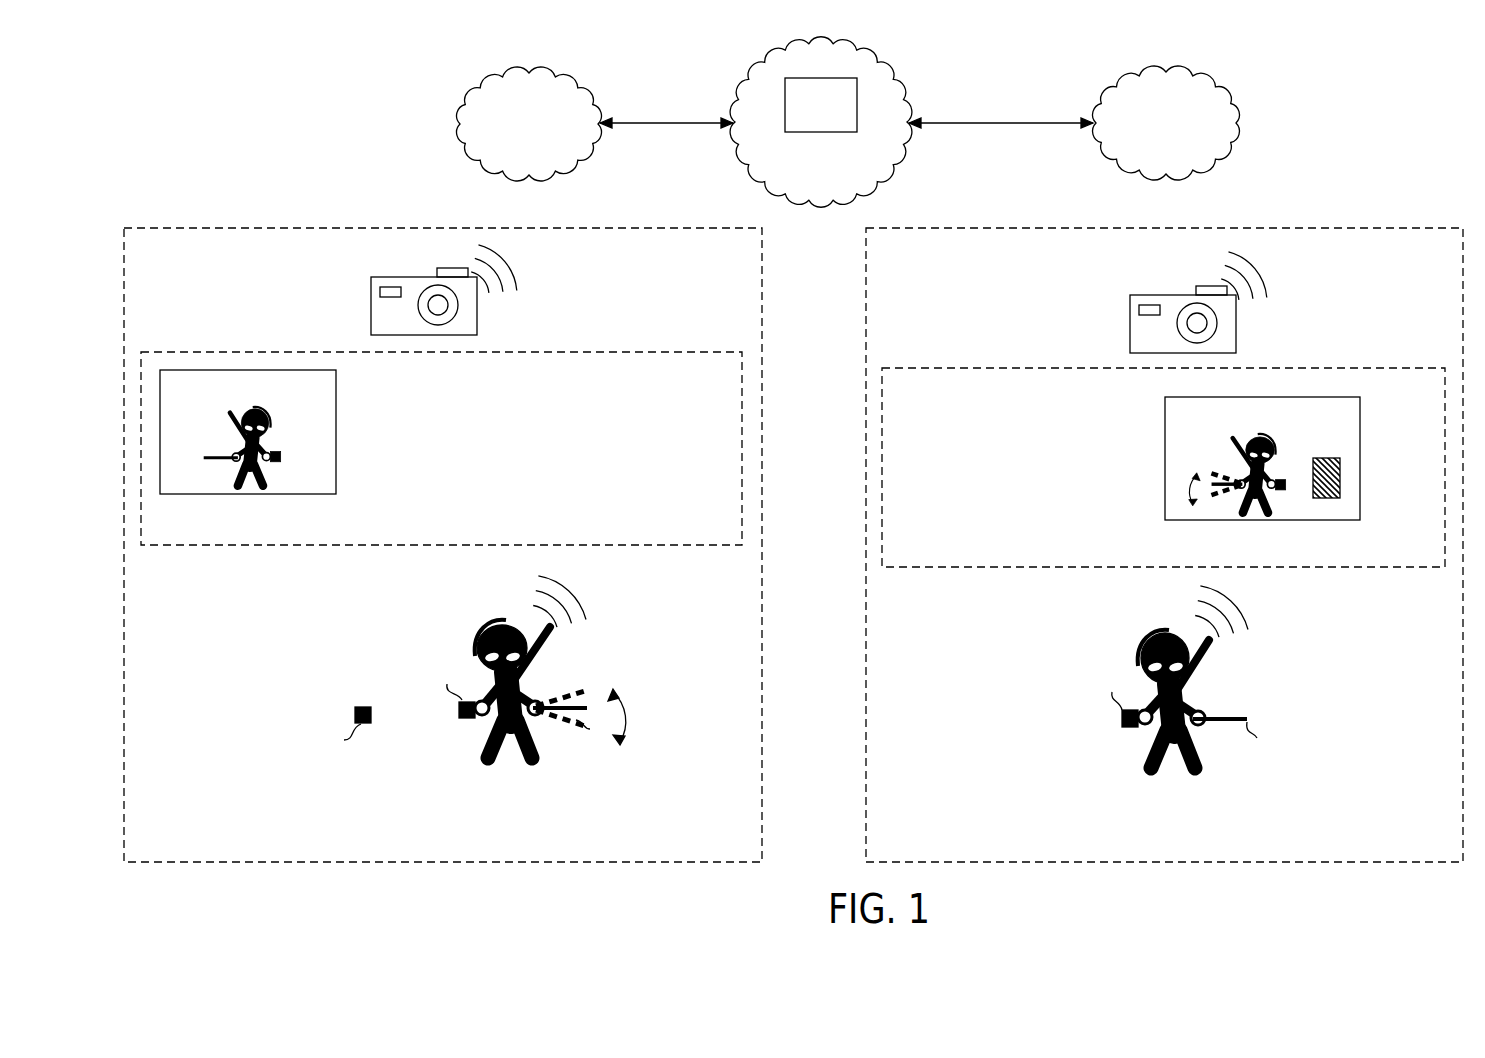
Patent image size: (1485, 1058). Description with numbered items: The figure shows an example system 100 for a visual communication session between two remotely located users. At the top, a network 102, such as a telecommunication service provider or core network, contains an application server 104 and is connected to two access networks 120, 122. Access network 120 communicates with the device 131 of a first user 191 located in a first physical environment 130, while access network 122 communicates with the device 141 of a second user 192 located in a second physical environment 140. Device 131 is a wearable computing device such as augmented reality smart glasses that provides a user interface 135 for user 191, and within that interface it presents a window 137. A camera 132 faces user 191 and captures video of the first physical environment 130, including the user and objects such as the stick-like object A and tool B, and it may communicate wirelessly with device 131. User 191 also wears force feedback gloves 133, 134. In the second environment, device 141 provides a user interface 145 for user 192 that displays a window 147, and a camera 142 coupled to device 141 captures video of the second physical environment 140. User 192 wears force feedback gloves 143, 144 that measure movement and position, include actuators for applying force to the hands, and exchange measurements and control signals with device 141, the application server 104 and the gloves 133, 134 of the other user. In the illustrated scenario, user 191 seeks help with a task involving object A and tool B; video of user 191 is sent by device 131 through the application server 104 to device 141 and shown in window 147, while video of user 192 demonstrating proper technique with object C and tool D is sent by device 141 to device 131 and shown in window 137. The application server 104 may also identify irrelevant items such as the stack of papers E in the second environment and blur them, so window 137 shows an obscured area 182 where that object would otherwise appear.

The system 100 is at (157, 49).
The network 102 is at (804, 186).
The application server 104 is at (804, 125).
The access network 120 is at (1149, 151).
The access network 122 is at (512, 151).
The first physical environment 130 is at (1214, 857).
The device 131 is at (1210, 640).
The camera 132 is at (1130, 325).
The force feedback glove 133 is at (1148, 725).
The force feedback glove 134 is at (1205, 710).
The user interface 135 is at (1058, 567).
The window 137 is at (1258, 446).
The second physical environment 140 is at (503, 857).
The device 141 is at (555, 627).
The camera 142 is at (371, 315).
The force feedback glove 143 is at (483, 716).
The force feedback glove 144 is at (540, 700).
The user interface 145 is at (662, 545).
The window 147 is at (200, 494).
The obscured area 182 is at (1327, 458).
The first user 191 is at (1193, 770).
The second user 192 is at (530, 760).